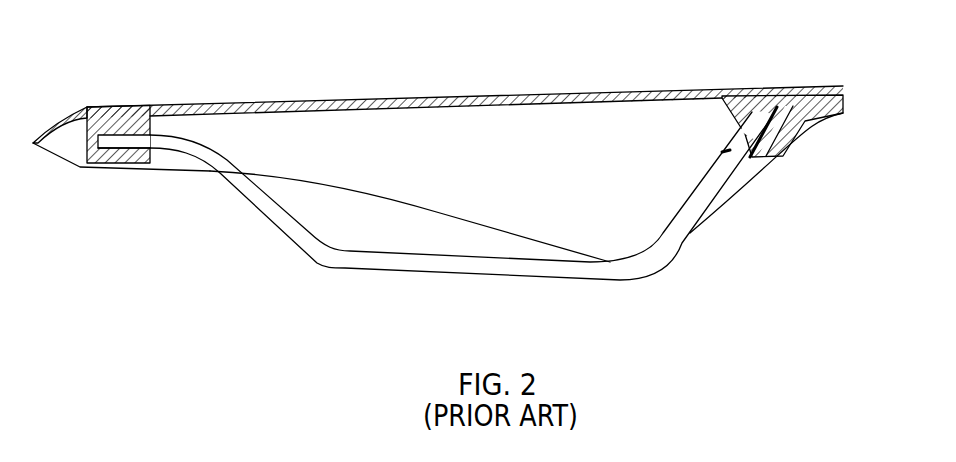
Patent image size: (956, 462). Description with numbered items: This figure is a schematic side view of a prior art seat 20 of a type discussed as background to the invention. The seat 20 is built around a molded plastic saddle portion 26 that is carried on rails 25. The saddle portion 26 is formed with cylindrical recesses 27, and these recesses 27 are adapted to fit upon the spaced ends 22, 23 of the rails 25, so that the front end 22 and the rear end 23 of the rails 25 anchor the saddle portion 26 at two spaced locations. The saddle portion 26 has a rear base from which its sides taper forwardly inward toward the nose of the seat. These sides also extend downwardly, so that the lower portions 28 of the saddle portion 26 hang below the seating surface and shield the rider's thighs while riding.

The prior art seat 20 is at (769, 191).
The front end of rails 22 is at (125, 138).
The rear end of rails 23 is at (772, 116).
The rails 25 is at (463, 268).
The saddle portion 26 is at (466, 90).
The cylindrical recesses 27 is at (108, 160).
The shielding portions 28 is at (533, 248).